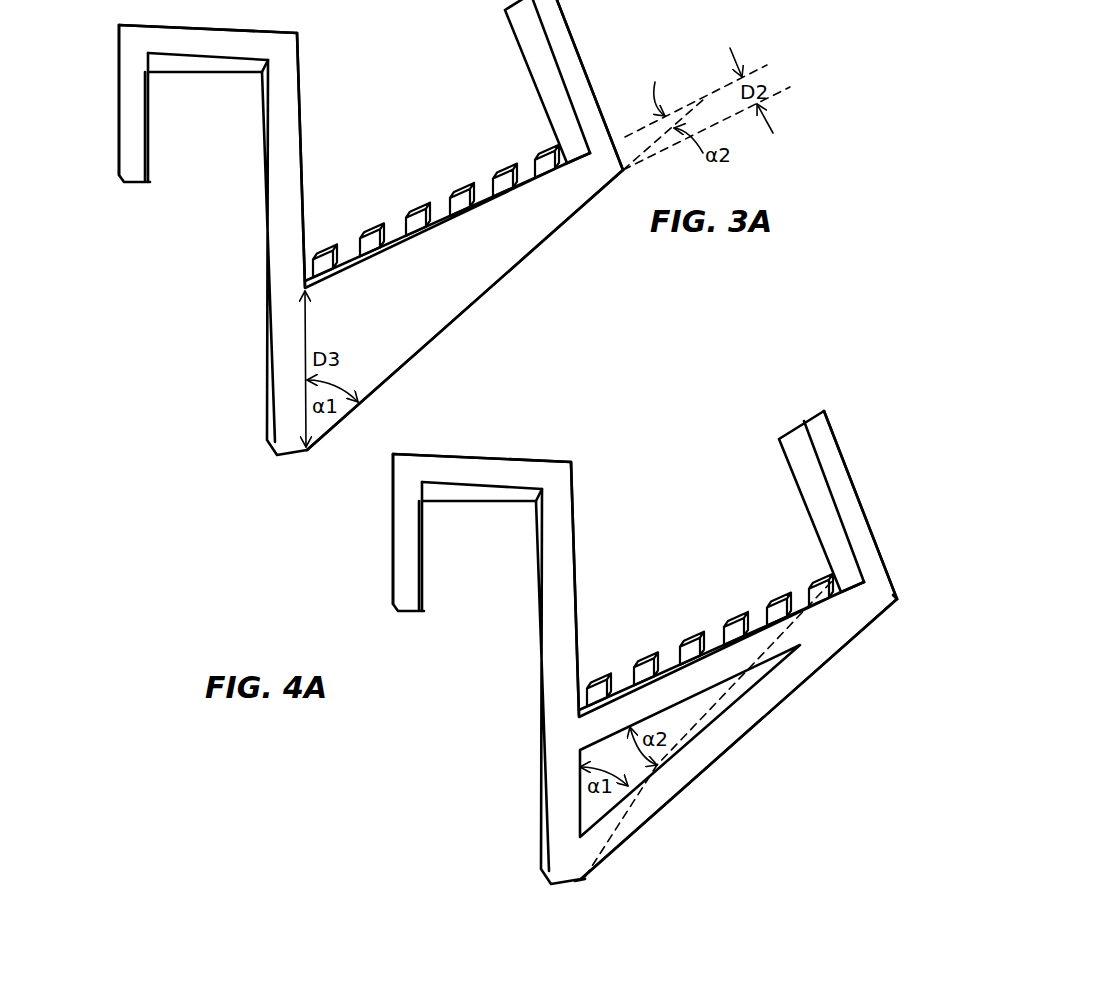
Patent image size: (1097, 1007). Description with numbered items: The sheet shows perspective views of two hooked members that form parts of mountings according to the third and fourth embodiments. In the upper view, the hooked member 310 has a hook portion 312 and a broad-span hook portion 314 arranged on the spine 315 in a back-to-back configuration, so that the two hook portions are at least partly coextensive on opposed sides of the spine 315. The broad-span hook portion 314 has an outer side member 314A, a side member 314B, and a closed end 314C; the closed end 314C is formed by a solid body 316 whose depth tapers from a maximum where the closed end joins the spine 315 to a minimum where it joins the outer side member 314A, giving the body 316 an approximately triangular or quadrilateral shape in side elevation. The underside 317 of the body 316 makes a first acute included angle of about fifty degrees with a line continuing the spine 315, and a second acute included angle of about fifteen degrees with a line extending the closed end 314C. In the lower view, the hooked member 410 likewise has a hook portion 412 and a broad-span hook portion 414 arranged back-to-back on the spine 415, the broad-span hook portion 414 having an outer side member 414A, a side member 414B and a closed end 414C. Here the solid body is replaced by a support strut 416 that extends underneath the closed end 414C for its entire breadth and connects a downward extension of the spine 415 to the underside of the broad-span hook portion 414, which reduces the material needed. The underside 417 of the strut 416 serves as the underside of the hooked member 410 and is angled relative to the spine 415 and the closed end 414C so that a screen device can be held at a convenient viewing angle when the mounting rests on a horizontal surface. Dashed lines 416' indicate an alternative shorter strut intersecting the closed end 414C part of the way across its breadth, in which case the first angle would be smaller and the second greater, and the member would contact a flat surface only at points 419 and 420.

In FIG. 3A, the hooked member 310 is at (186, 265).
In FIG. 3A, the hook portion 312 is at (118, 82).
In FIG. 3A, the broad-span hook portion 314 is at (567, 23).
In FIG. 3A, the outer side member 314A is at (577, 70).
In FIG. 3A, the vertical leg 314B is at (292, 178).
In FIG. 3A, the closed end 314C is at (443, 213).
In FIG. 3A, the spine 315 is at (300, 112).
In FIG. 3A, the body 316 is at (450, 289).
In FIG. 3A, the underside 317 is at (498, 283).
In FIG. 4A, the hooked member 410 is at (437, 735).
In FIG. 4A, the hook portion 412 is at (392, 533).
In FIG. 4A, the broad-span hook portion 414 is at (838, 441).
In FIG. 4A, the bar front face 414A is at (853, 502).
In FIG. 4A, the vertical leg 414B is at (565, 637).
In FIG. 4A, the closed end 414C is at (673, 660).
In FIG. 4A, the spine 415 is at (575, 557).
In FIG. 4A, the support strut 416 is at (721, 709).
In FIG. 4A, the dashed lines indicating shorter strut 416' is at (710, 727).
In FIG. 4A, the underside of strut 417 is at (715, 763).
In FIG. 4A, the contact point 419 is at (587, 880).
In FIG. 4A, the contact point 420 is at (903, 601).